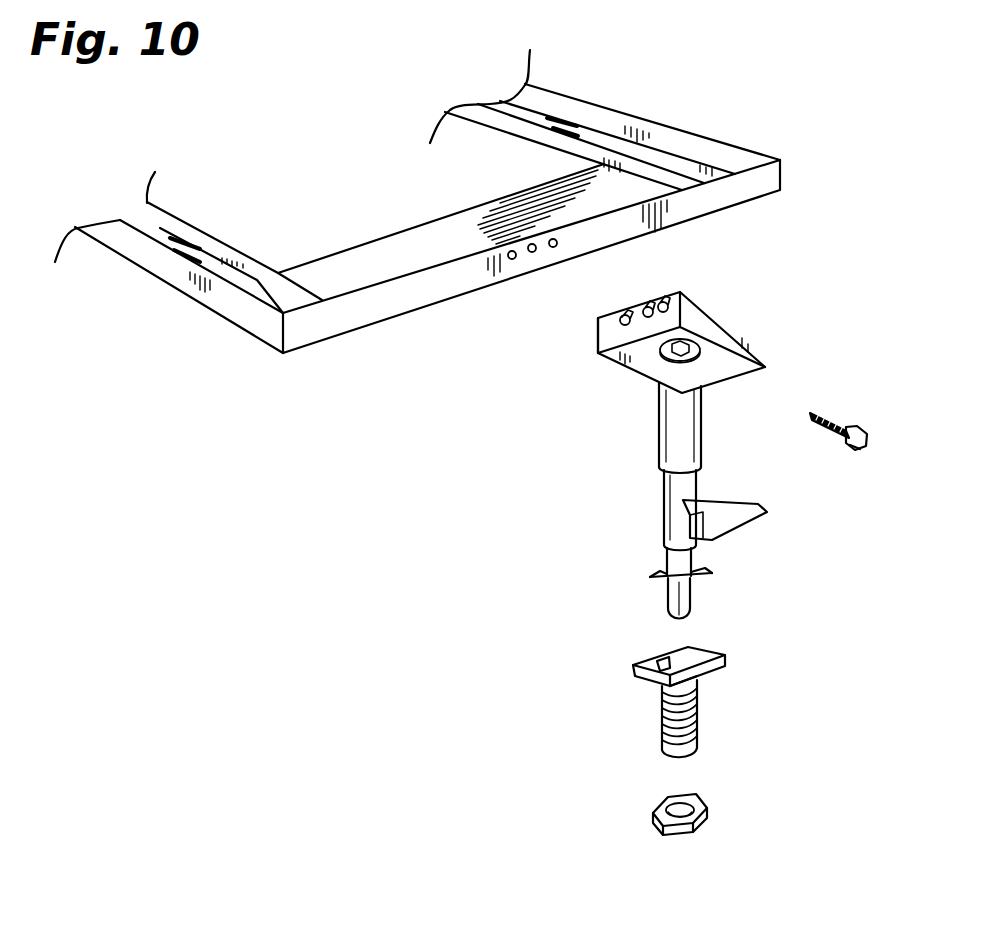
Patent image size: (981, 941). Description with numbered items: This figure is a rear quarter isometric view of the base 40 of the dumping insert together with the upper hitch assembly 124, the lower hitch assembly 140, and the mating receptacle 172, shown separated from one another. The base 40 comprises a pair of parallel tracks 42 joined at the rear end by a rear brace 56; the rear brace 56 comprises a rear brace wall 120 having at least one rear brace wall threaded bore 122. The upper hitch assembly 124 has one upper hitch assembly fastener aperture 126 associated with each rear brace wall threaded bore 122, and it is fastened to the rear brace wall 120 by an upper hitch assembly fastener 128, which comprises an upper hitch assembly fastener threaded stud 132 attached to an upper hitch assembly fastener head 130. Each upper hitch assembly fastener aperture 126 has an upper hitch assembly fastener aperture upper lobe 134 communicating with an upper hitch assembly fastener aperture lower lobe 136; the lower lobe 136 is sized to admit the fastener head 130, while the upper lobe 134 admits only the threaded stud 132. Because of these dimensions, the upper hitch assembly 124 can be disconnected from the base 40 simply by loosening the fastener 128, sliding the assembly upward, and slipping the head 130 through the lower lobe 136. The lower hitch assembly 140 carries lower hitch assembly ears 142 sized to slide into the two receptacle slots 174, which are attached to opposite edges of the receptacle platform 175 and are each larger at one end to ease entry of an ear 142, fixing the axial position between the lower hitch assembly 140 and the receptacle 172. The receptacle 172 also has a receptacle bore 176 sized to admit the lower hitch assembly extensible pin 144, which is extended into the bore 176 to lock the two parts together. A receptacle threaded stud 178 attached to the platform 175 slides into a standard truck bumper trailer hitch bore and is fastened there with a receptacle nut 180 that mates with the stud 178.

The base 40 is at (764, 84).
The tracks 42 is at (592, 117).
The rear brace 56 is at (417, 243).
The rear brace wall 120 is at (448, 288).
The rear brace wall threaded bore 122 is at (512, 259).
The upper hitch assembly 124 is at (678, 426).
The upper hitch assembly fastener aperture 126 is at (643, 303).
The upper hitch assembly fastener 128 is at (849, 415).
The upper hitch assembly fastener head 130 is at (855, 452).
The upper hitch assembly fastener threaded stud 132 is at (828, 412).
The upper hitch assembly fastener aperture upper lobe 134 is at (657, 307).
The upper hitch assembly fastener aperture lower lobe 136 is at (702, 309).
The lower hitch assembly 140 is at (677, 495).
The lower hitch assembly ears 142 is at (660, 577).
The lower hitch assembly extensible pin 144 is at (682, 612).
The receptacle 172 is at (662, 722).
The receptacle slots 174 is at (721, 668).
The receptacle platform 175 is at (698, 673).
The receptacle bore 176 is at (668, 660).
The receptacle threaded stud 178 is at (697, 740).
The receptacle nut 180 is at (707, 813).